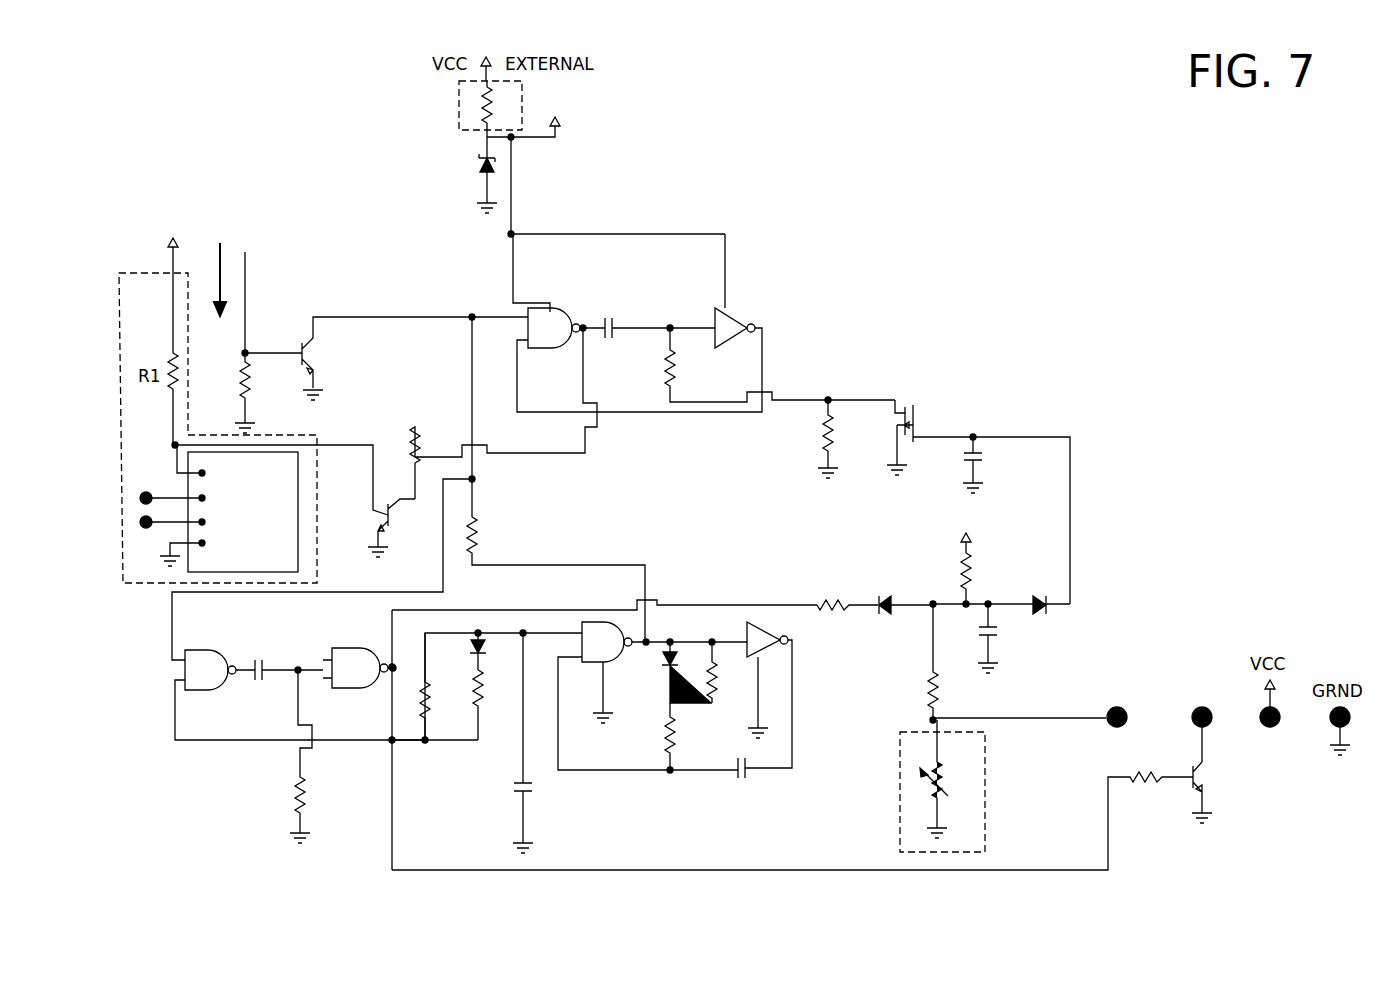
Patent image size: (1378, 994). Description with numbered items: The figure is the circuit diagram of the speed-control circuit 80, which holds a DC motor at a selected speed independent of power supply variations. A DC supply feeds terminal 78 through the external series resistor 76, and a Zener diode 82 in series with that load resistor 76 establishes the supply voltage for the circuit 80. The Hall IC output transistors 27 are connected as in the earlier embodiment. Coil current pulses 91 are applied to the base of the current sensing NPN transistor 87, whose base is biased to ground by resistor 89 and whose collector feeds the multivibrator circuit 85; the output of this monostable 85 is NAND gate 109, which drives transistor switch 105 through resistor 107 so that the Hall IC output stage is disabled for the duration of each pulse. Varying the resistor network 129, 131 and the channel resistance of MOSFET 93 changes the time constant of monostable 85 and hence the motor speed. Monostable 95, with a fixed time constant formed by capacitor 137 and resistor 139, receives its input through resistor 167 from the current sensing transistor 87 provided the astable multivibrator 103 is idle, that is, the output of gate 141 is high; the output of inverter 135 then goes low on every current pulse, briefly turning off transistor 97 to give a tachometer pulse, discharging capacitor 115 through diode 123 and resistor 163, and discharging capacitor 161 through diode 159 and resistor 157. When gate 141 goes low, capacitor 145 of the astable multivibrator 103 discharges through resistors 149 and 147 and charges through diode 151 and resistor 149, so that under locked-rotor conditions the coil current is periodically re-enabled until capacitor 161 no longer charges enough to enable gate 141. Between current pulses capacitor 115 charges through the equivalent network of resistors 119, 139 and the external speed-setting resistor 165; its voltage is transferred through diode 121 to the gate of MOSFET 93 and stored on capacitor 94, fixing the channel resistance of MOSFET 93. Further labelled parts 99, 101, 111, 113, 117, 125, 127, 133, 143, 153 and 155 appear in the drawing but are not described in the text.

The Hall IC output transistors 27 is at (116, 340).
The external series resistor 76 is at (467, 107).
The terminal 78 is at (513, 232).
The circuit 80 is at (938, 260).
The Zener diode 82 is at (480, 175).
The multivibrator circuit 85 is at (774, 278).
The current sensing NPN transistor 87 is at (320, 352).
The biasing resistor 89 is at (250, 393).
The coil current pulses 91 is at (220, 243).
The MOSFET 93 is at (932, 422).
The capacitor 94 is at (982, 457).
The monostable 95 is at (188, 768).
The transistor 97 is at (1206, 776).
The resistor R15 99 is at (1143, 783).
The TACH terminal 101 is at (1200, 672).
The astable multivibrator 103 is at (777, 795).
The transistor switch 105 is at (374, 511).
The resistor 107 is at (405, 468).
The NAND gate 109 is at (537, 298).
The PWM terminal 111 is at (1112, 672).
The node 113 is at (990, 590).
The capacitor 115 is at (996, 634).
The resistor R14 117 is at (954, 562).
The resistor 119 is at (940, 526).
The diode 121 is at (1051, 592).
The diode 123 is at (880, 598).
The inverter IN2 125 is at (737, 345).
The capacitor C3 127 is at (624, 317).
The resistor 129 is at (666, 369).
The resistor 131 is at (816, 446).
The NAND gate G4 133 is at (229, 652).
The inverter 135 is at (333, 651).
The capacitor 137 is at (260, 688).
The resistor 139 is at (303, 792).
The gate 141 is at (602, 634).
The inverter IN3 143 is at (758, 626).
The capacitor 145 is at (731, 776).
The resistor 147 is at (712, 656).
The resistor 149 is at (674, 740).
The diode 151 is at (665, 664).
The timing circuit 153 is at (502, 810).
The resistor R5 155 is at (426, 704).
The resistor 157 is at (480, 708).
The diode 159 is at (487, 649).
The capacitor 161 is at (531, 793).
The resistor 163 is at (827, 613).
The external resistor 165 is at (986, 811).
The resistor 167 is at (480, 529).